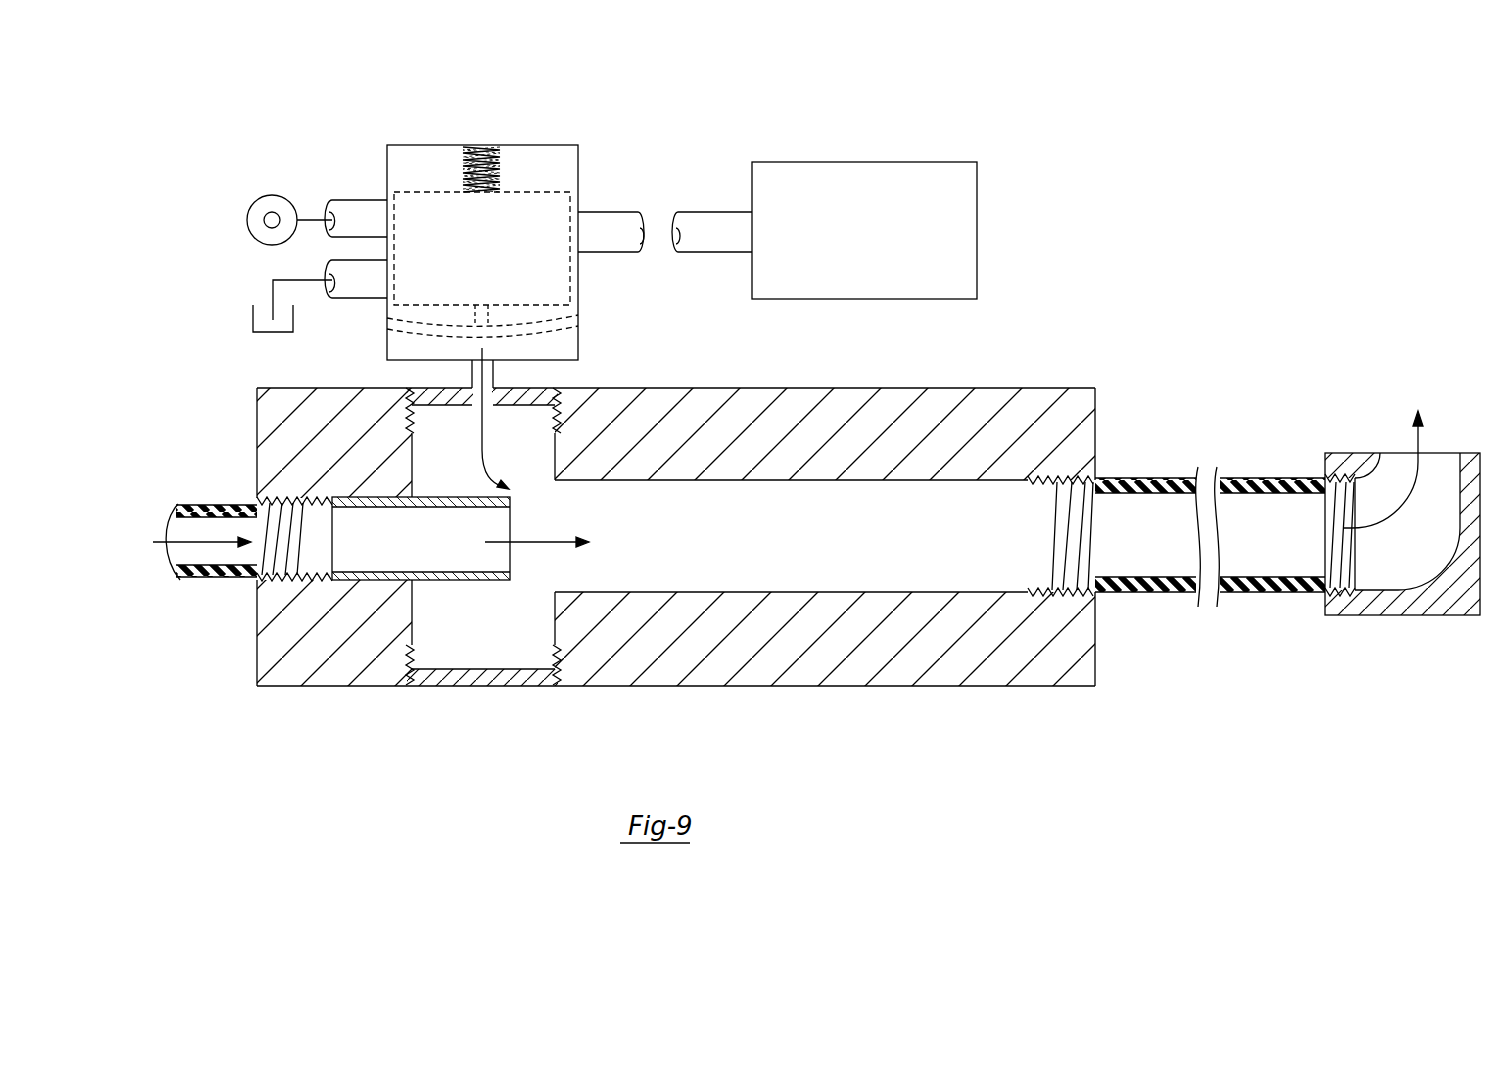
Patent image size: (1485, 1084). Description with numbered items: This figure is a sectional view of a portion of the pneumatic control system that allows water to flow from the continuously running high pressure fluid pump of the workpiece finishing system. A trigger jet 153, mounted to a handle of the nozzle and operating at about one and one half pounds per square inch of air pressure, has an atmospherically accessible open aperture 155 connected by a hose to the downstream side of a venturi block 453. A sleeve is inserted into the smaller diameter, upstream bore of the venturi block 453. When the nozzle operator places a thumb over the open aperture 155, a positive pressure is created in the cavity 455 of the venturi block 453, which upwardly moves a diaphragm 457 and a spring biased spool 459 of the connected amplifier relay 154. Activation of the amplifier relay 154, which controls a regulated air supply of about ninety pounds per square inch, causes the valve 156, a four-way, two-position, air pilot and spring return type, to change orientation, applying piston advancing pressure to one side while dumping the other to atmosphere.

The venturi block 453 is at (998, 405).
The cavity 455 is at (565, 343).
The diaphragm 457 is at (563, 320).
The spring biased spool 459 is at (491, 269).
The amplifier relay 154 is at (466, 163).
The valve 156 is at (882, 265).
The trigger jet 153 is at (1433, 595).
The open aperture 155 is at (1434, 453).